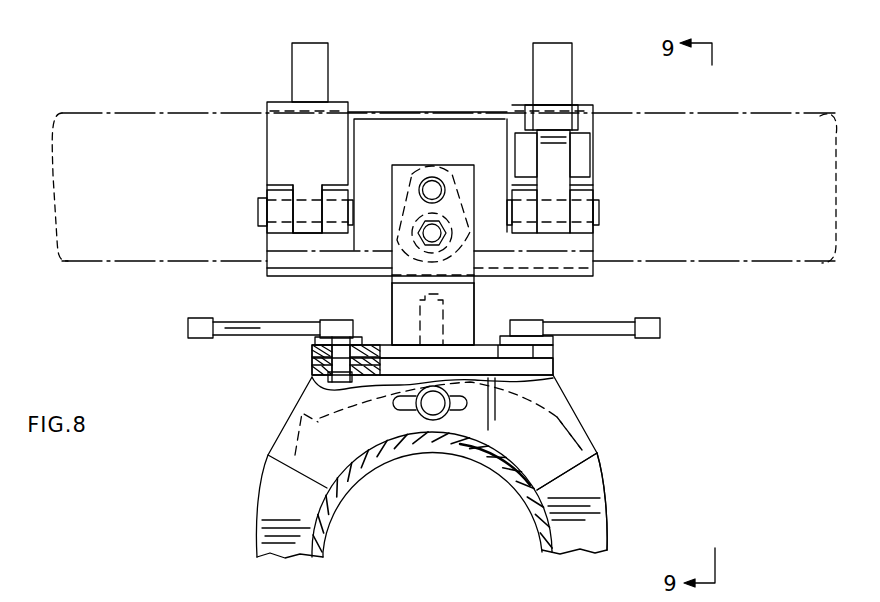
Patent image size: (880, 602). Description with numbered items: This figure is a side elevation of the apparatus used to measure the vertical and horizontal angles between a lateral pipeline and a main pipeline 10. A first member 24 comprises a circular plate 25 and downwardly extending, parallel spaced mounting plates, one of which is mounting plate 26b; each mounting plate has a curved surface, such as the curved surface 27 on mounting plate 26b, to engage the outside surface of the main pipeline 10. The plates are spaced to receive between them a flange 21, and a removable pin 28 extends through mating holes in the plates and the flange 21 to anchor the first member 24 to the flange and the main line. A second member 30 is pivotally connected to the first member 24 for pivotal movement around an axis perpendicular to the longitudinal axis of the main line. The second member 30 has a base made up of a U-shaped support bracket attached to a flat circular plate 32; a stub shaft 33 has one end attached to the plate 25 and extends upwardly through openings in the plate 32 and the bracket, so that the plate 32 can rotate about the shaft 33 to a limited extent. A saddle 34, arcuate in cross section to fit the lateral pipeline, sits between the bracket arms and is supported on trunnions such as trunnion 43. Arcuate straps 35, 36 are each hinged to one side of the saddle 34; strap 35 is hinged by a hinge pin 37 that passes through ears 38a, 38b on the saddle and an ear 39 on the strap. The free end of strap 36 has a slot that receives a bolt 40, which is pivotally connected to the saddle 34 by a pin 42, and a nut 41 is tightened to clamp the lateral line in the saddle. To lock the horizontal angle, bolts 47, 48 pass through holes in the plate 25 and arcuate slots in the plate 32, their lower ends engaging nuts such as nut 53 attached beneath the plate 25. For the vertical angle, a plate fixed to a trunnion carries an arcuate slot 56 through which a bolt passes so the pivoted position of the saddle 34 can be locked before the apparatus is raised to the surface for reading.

The main pipeline 10 is at (327, 523).
The flange 21 is at (604, 533).
The first member 24 is at (597, 412).
The circular plate 25 is at (556, 368).
The mounting plate 26b is at (598, 452).
The curved surface 27 is at (508, 447).
The removable pin 28 is at (433, 412).
The second member 30 is at (356, 295).
The circular plate 32 is at (556, 352).
The stub shaft 33 is at (446, 313).
The saddle 34 is at (580, 268).
The arcuate strap 35 is at (266, 137).
The arcuate strap 36 is at (598, 110).
The hinge pin 37 is at (262, 211).
The ear 38a is at (280, 237).
The ear 38b is at (336, 237).
The ear 39 is at (307, 238).
The bolt 40 is at (559, 167).
The nut 41 is at (572, 112).
The pin 42 is at (600, 210).
The trunnion 43 is at (443, 183).
The bolt 47 is at (337, 362).
The bolt 48 is at (533, 319).
The nut 53 is at (312, 388).
The arcuate slot 56 is at (461, 244).